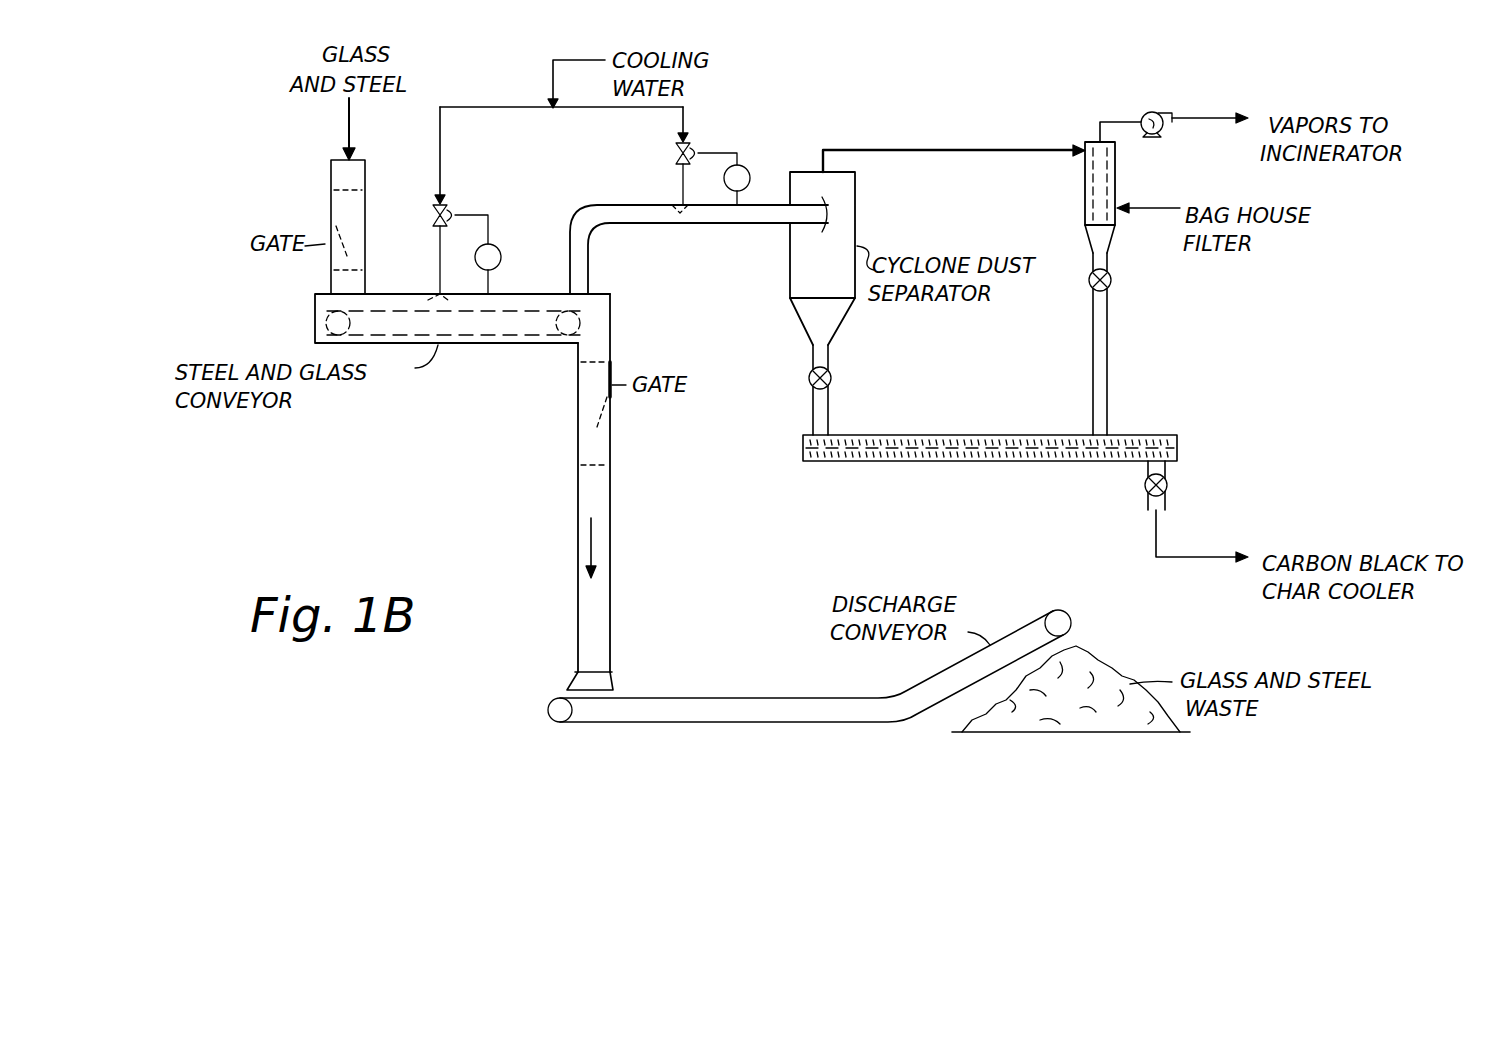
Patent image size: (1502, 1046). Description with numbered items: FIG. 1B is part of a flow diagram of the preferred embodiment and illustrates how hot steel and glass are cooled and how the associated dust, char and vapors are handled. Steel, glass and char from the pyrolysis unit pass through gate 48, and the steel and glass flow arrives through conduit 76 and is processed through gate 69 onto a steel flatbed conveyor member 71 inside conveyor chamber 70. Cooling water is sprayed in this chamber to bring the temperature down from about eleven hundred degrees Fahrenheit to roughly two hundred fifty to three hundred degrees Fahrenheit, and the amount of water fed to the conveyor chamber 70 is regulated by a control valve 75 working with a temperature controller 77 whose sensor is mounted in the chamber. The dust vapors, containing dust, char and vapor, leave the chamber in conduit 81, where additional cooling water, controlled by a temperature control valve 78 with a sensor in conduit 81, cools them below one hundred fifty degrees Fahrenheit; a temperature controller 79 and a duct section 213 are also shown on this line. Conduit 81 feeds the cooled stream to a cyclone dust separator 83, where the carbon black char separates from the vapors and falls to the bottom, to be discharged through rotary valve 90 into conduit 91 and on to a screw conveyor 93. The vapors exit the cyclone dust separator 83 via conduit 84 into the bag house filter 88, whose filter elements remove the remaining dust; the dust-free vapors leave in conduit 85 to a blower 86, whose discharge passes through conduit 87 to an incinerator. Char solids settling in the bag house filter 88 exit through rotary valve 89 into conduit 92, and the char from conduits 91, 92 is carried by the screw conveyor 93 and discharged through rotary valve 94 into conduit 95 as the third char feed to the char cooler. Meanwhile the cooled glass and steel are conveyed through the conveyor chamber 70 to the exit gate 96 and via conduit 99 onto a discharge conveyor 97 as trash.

The gate 48 is at (435, 300).
The gate 69 is at (330, 205).
The conveyor chamber 70 is at (502, 346).
The steel flatbed conveyor member 71 is at (465, 337).
The control valve 75 is at (432, 214).
The conduit 76 is at (340, 120).
The temperature controller 77 is at (501, 257).
The temperature control valve 78 is at (670, 148).
The temperature controller 79 is at (749, 165).
The conduit 81 is at (722, 226).
The cyclone dust separator 83 is at (857, 203).
The conduit 84 is at (932, 148).
The conduit 85 is at (1098, 128).
The blower 86 is at (1148, 112).
The conduit 87 is at (1208, 116).
The bag house filter 88 is at (1117, 162).
The rotary valve 89 is at (1112, 282).
The rotary valve 90 is at (833, 380).
The conduit 91 is at (830, 408).
The conduit 92 is at (1108, 338).
The screw conveyor 93 is at (960, 466).
The rotary valve 94 is at (1170, 487).
The conduit 95 is at (1191, 562).
The exit gate 96 is at (612, 398).
The discharge conveyor 97 is at (666, 695).
The conduit 99 is at (612, 518).
The duct section 213 is at (680, 208).